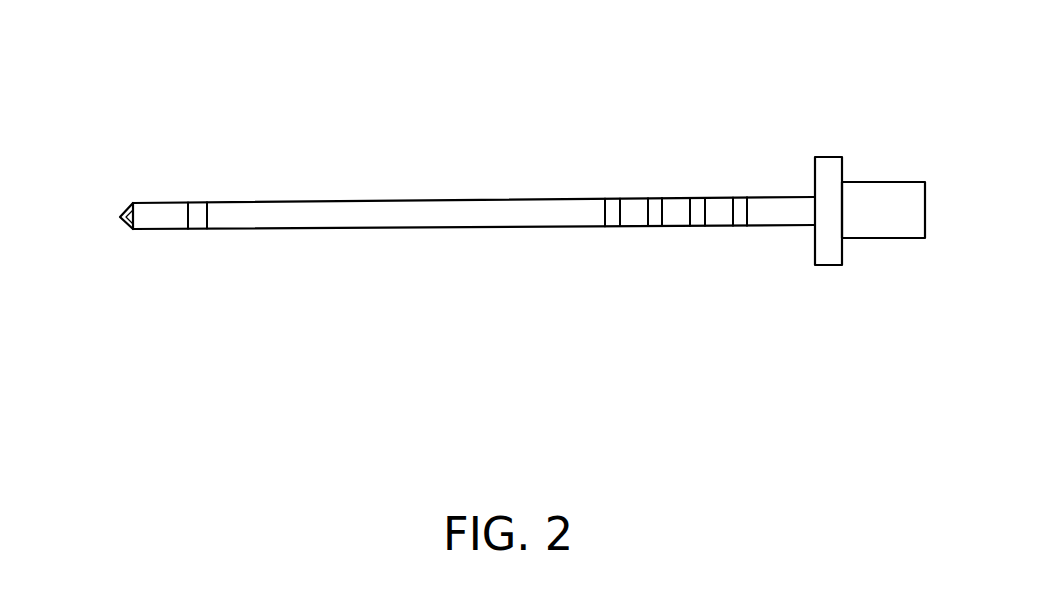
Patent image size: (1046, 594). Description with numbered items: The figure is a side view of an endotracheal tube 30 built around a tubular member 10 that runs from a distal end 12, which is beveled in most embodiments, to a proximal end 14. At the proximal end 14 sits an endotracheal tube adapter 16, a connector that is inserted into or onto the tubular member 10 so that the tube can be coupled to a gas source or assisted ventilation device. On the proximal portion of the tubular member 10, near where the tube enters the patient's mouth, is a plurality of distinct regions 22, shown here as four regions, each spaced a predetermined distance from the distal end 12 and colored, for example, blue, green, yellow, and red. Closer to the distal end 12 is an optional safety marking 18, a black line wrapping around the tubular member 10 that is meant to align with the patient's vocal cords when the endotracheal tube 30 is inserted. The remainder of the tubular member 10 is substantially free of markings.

The endotracheal tube 30 is at (259, 145).
The tubular member 10 is at (470, 200).
The distal end 12 is at (123, 220).
The safety marking 18 is at (195, 230).
The plurality of distinct regions 22 is at (752, 118).
The proximal end 14 is at (815, 208).
The endotracheal tube adapter 16 is at (882, 181).